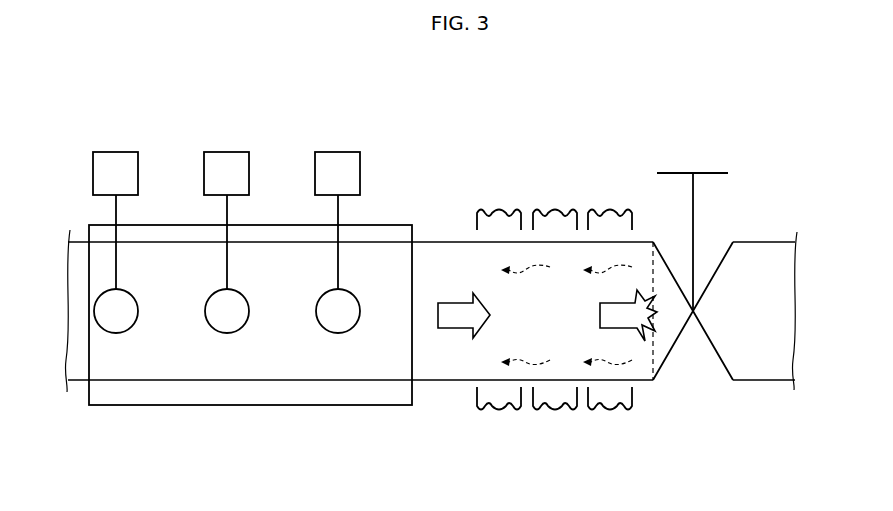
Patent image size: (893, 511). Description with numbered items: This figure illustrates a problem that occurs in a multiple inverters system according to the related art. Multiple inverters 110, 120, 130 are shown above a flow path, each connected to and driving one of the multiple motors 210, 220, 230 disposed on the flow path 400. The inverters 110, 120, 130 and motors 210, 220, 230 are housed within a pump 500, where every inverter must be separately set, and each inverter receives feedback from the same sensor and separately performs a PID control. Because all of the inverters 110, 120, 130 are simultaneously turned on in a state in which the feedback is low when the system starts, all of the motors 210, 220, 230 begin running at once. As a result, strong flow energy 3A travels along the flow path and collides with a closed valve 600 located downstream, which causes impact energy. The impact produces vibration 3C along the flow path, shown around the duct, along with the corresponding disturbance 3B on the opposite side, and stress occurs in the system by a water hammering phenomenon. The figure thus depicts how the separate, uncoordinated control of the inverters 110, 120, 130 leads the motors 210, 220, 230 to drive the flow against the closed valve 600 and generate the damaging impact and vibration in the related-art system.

The inverter 110 is at (128, 152).
The inverter 120 is at (239, 152).
The inverter 130 is at (350, 152).
The motor 210 is at (131, 293).
The motor 220 is at (242, 293).
The motor 230 is at (353, 293).
The cooling duct / flow channel 400 is at (126, 381).
The pump 500 is at (350, 406).
The closed valve 600 is at (724, 172).
The strong flow energy 3A is at (450, 302).
The lower heater region 3B is at (526, 366).
The vibration 3C is at (592, 210).